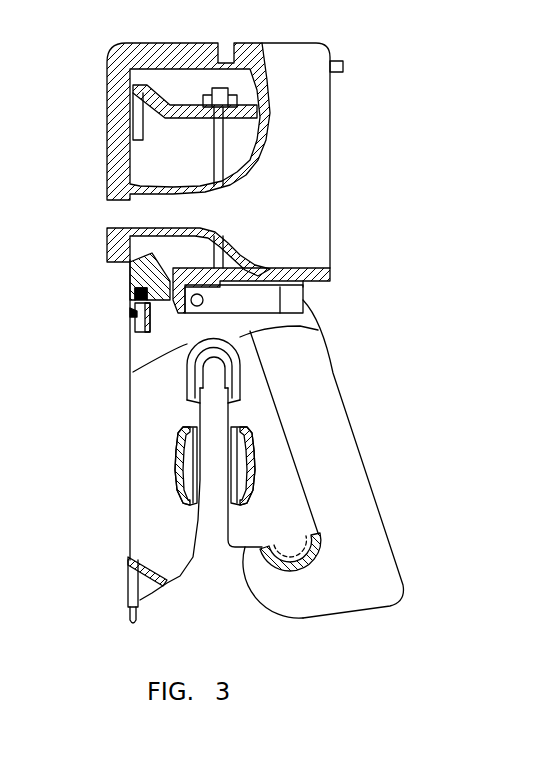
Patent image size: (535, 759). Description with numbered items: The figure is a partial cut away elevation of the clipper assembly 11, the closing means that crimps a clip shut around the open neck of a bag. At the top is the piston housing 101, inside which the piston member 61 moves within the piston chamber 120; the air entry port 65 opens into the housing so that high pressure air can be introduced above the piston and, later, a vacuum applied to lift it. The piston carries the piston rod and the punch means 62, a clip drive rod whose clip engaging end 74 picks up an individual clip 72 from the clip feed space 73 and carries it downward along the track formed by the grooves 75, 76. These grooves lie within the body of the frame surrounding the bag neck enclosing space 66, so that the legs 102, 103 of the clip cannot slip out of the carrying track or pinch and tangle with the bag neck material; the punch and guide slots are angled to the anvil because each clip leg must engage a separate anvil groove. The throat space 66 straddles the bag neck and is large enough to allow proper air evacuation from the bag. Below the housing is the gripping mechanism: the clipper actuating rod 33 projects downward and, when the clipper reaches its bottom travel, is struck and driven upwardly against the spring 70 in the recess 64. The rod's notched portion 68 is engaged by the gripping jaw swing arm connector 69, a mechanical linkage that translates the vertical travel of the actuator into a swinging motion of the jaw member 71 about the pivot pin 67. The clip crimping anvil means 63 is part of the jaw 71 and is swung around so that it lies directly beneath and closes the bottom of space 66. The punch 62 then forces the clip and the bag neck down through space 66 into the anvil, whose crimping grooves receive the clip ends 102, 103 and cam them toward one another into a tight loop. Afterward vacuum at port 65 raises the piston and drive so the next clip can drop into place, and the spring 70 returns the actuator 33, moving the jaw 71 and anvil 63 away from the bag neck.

The piston housing 101 is at (328, 146).
The clipper assembly 11 is at (281, 200).
The air entry port 65 is at (345, 66).
The piston chamber 120 is at (188, 99).
The piston member 61 is at (140, 100).
The punch means 62 is at (215, 158).
The recess 64 is at (132, 283).
The spring 70 is at (128, 294).
The gripping jaw swing arm connector 69 is at (128, 311).
The driving rod notched portion 68 is at (137, 322).
The pivot pin 67 is at (197, 303).
The clip feed space 73 is at (213, 373).
The clip engaging end 74 is at (187, 368).
The clip 72 is at (187, 388).
The clip leg 102 is at (193, 410).
The bag neck enclosing space 66 is at (225, 448).
The groove 75 is at (177, 458).
The groove 76 is at (255, 456).
The jaw member 71 is at (300, 380).
The clip leg 103 is at (240, 400).
The clip crimping anvil means 63 is at (272, 568).
The clipper actuating rod 33 is at (128, 607).